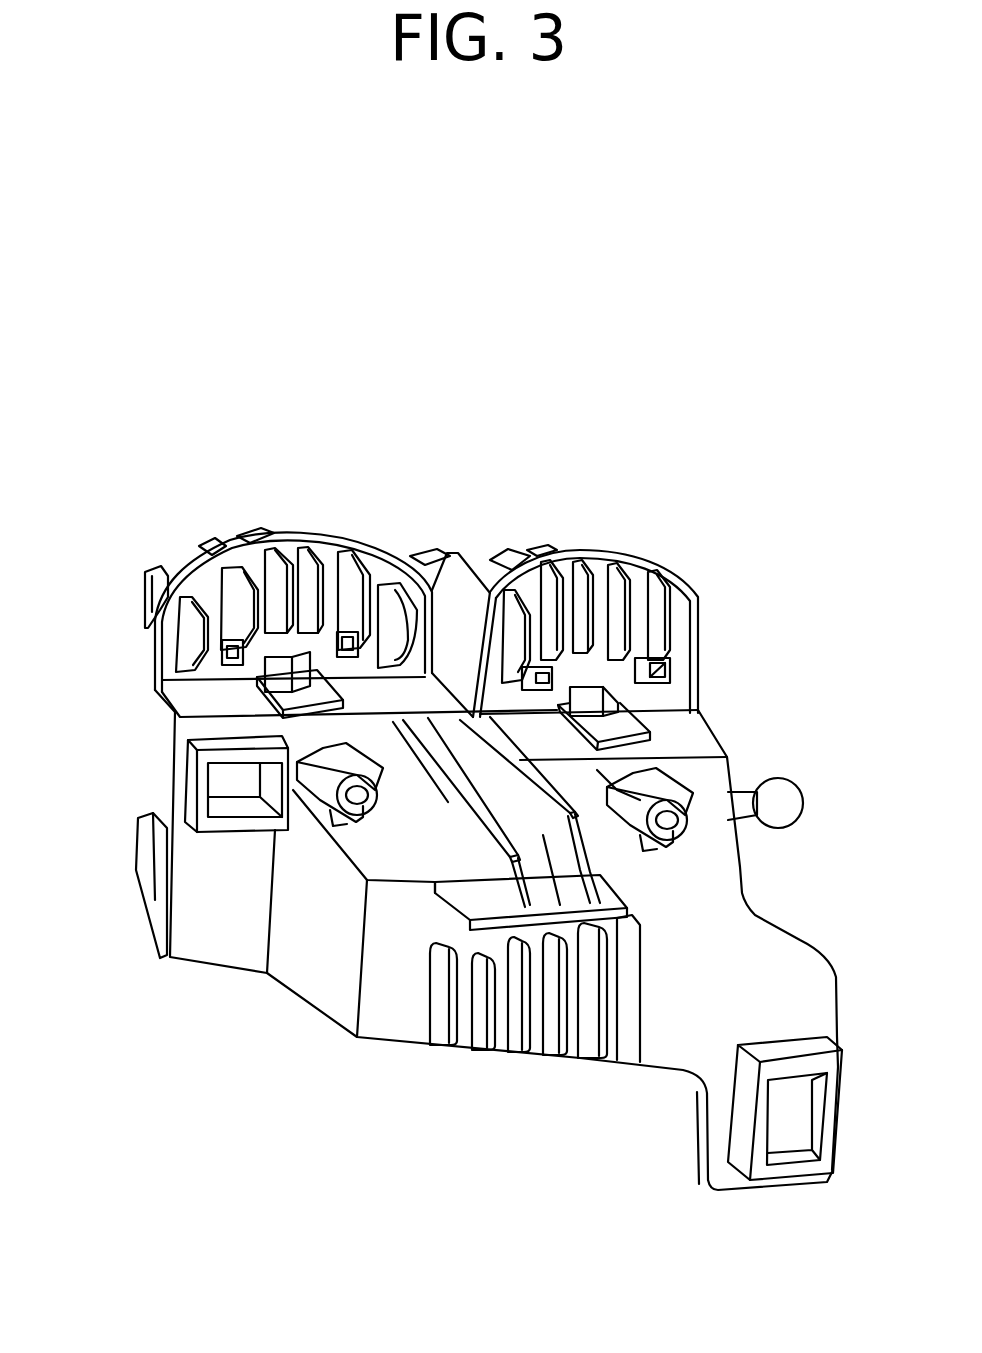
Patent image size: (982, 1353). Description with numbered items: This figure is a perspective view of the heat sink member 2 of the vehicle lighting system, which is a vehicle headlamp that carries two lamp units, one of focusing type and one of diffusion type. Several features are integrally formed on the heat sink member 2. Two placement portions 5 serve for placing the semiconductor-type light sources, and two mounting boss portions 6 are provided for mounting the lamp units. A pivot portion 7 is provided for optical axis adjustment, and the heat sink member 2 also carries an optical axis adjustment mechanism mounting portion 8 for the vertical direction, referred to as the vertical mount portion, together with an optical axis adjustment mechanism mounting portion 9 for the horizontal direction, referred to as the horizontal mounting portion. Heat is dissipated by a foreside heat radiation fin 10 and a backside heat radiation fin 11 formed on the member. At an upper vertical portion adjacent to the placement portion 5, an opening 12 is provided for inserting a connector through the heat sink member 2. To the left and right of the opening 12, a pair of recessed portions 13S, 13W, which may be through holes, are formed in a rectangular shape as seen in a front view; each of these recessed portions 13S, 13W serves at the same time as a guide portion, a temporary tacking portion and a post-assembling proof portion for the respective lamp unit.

The heat sink member 2 is at (625, 545).
The placement portion 5 is at (263, 705).
The mounting boss portion 6 is at (335, 828).
The pivot portion 7 is at (780, 778).
The optical axis adjustment mechanism mounting portion for vertical direction 8 is at (781, 1170).
The optical axis adjustment mechanism mounting portion for horizontal direction 9 is at (197, 782).
The foreside heat radiation fin 10 is at (357, 538).
The backside heat radiation fin 11 is at (237, 525).
The opening 12 is at (263, 670).
The recessed portion 13S is at (347, 642).
The recessed portion 13W is at (543, 667).